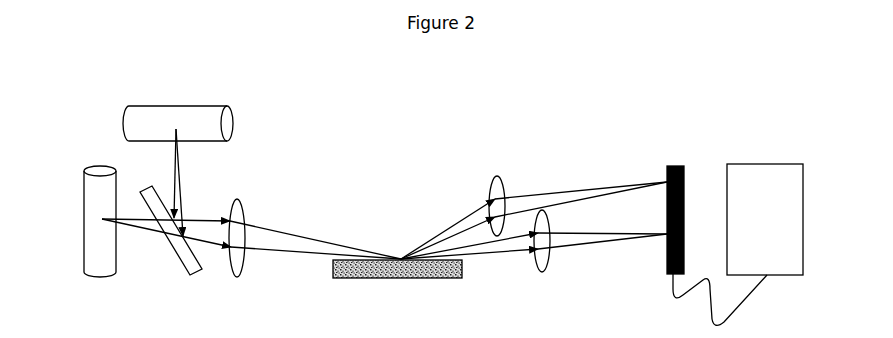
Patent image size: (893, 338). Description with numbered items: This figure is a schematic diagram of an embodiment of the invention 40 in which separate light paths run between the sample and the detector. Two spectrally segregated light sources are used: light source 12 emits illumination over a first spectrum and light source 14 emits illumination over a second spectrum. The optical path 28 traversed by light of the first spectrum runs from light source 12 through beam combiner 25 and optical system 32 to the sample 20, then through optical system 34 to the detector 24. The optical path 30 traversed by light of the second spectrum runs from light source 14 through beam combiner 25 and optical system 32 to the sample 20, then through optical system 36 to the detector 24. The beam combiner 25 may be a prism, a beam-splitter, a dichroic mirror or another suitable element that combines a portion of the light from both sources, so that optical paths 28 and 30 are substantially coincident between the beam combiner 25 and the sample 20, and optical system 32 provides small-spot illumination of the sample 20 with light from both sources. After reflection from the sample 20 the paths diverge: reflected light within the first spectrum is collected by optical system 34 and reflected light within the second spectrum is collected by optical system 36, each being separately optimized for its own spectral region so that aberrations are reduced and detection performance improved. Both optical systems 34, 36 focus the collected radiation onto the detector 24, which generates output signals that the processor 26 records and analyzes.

The embodiment of the invention 40 is at (434, 88).
The light source 12 is at (178, 110).
The light source 14 is at (100, 238).
The beam combiner 25 is at (174, 241).
The optical path 28 is at (420, 194).
The optical path 30 is at (384, 248).
The optical system 32 is at (238, 255).
The sample 20 is at (397, 287).
The optical system 34 is at (497, 192).
The optical system 36 is at (543, 255).
The detector 24 is at (677, 207).
The processor 26 is at (738, 232).